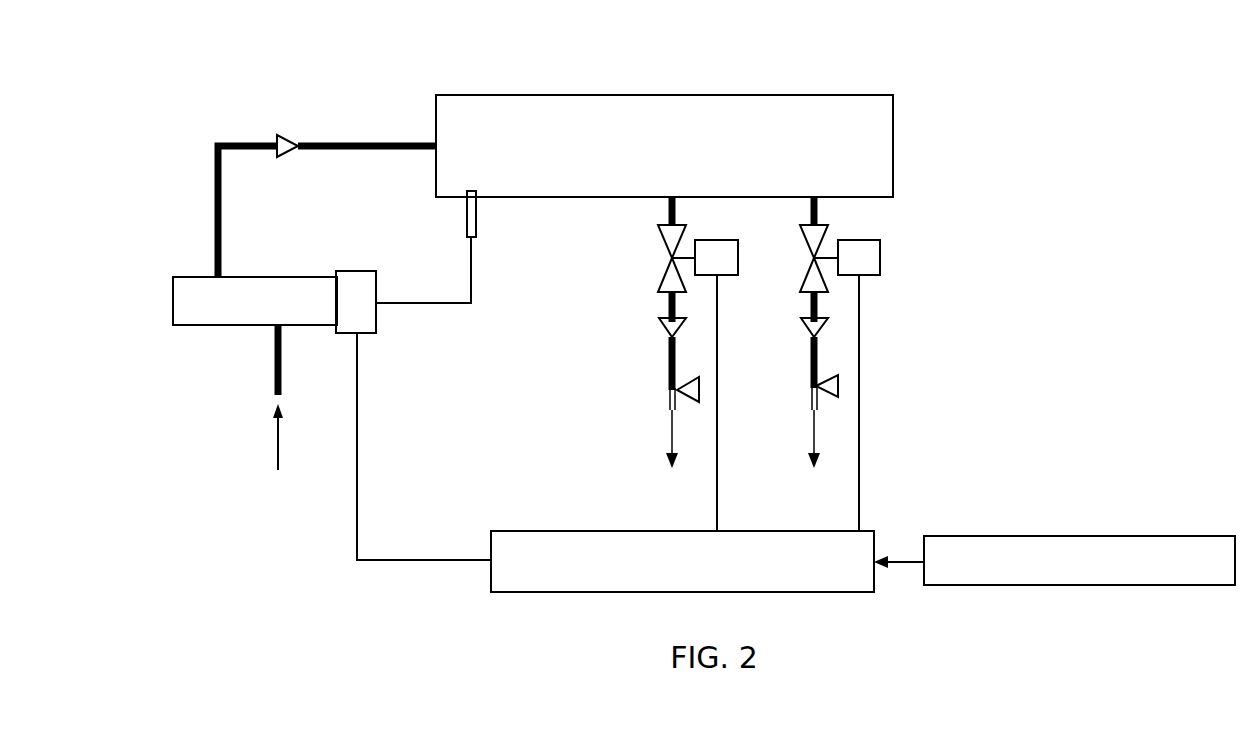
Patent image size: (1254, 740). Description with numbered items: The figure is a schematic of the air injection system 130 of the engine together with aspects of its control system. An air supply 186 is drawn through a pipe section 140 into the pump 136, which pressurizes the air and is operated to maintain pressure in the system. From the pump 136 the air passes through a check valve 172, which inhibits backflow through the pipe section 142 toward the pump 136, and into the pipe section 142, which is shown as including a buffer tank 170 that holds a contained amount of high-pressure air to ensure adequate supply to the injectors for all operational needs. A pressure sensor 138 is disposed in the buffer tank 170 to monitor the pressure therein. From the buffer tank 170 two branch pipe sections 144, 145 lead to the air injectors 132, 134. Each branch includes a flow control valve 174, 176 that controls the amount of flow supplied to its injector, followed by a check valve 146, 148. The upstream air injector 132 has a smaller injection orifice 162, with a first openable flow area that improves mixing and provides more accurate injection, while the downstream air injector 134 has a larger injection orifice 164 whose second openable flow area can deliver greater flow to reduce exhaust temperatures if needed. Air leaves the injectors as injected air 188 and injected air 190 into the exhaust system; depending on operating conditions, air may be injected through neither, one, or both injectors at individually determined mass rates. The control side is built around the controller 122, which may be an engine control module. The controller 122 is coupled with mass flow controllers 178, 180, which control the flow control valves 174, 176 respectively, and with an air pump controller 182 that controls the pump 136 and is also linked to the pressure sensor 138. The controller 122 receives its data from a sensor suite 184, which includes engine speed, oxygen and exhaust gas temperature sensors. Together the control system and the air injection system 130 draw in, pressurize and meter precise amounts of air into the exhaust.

The air injection system 130 is at (886, 72).
The buffer tank 170 is at (664, 146).
The pump 136 is at (255, 301).
The air pump controller 182 is at (357, 271).
The controller 122 is at (682, 561).
The sensor suite 184 is at (1054, 560).
The pipe section 142 is at (354, 141).
The check valve 172 is at (283, 137).
The pressure sensor 138 is at (467, 225).
The pipe section 140 is at (276, 373).
The air supply 186 is at (277, 456).
The branch pipe section 144 is at (669, 210).
The flow control valve 174 is at (662, 243).
The mass flow controller 178 is at (715, 240).
The check valve 146 is at (663, 325).
The air injector 132 is at (674, 390).
The injection orifice 162 is at (670, 401).
The injected air 188 is at (671, 455).
The branch pipe section 145 is at (818, 212).
The flow control valve 176 is at (806, 236).
The mass flow controller 180 is at (880, 258).
The check valve 148 is at (807, 325).
The air injector 134 is at (816, 386).
The injection orifice 164 is at (818, 404).
The injected air 190 is at (813, 455).